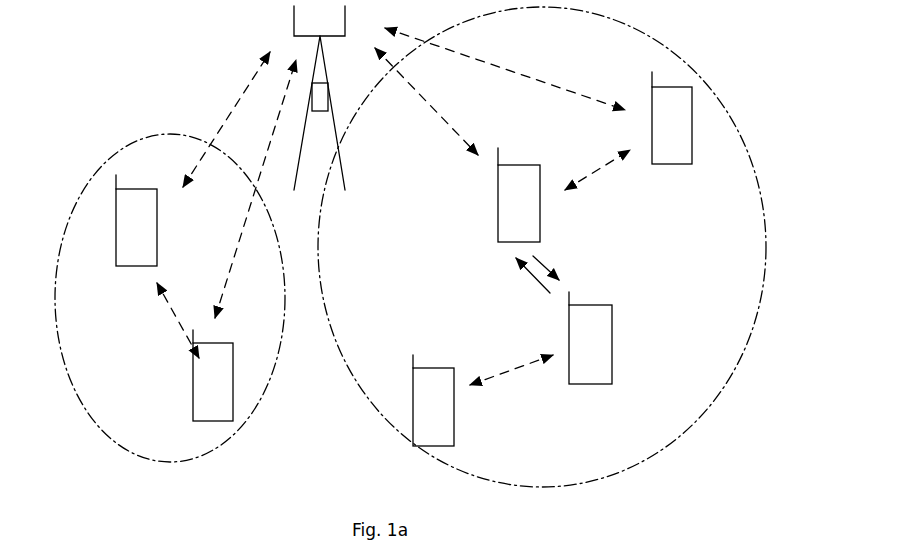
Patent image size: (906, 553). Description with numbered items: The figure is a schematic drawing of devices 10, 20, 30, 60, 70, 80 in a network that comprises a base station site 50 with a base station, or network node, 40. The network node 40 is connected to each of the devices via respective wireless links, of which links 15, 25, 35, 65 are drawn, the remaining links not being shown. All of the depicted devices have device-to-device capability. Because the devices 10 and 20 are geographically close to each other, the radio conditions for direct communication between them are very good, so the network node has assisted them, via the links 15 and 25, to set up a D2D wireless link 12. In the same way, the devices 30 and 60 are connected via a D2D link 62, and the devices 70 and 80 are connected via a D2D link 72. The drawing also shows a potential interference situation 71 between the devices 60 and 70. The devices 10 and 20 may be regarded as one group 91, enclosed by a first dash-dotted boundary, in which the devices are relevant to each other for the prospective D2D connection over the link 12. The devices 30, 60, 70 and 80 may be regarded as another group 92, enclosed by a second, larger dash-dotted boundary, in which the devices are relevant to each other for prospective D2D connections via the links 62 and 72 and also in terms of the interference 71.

The device 10 is at (136, 220).
The device 20 is at (213, 375).
The device 30 is at (672, 118).
The device 60 is at (519, 195).
The device 70 is at (590, 338).
The device 80 is at (433, 400).
The base station 40 is at (329, 95).
The base station site 50 is at (346, 151).
The wireless link 15 is at (209, 141).
The wireless link 25 is at (228, 282).
The wireless link 35 is at (505, 68).
The wireless link 65 is at (453, 126).
The D2D wireless link 12 is at (161, 318).
The D2D link 62 is at (602, 165).
The interference 71 is at (545, 268).
The D2D link 72 is at (516, 368).
The group 91 is at (78, 200).
The group 92 is at (745, 138).